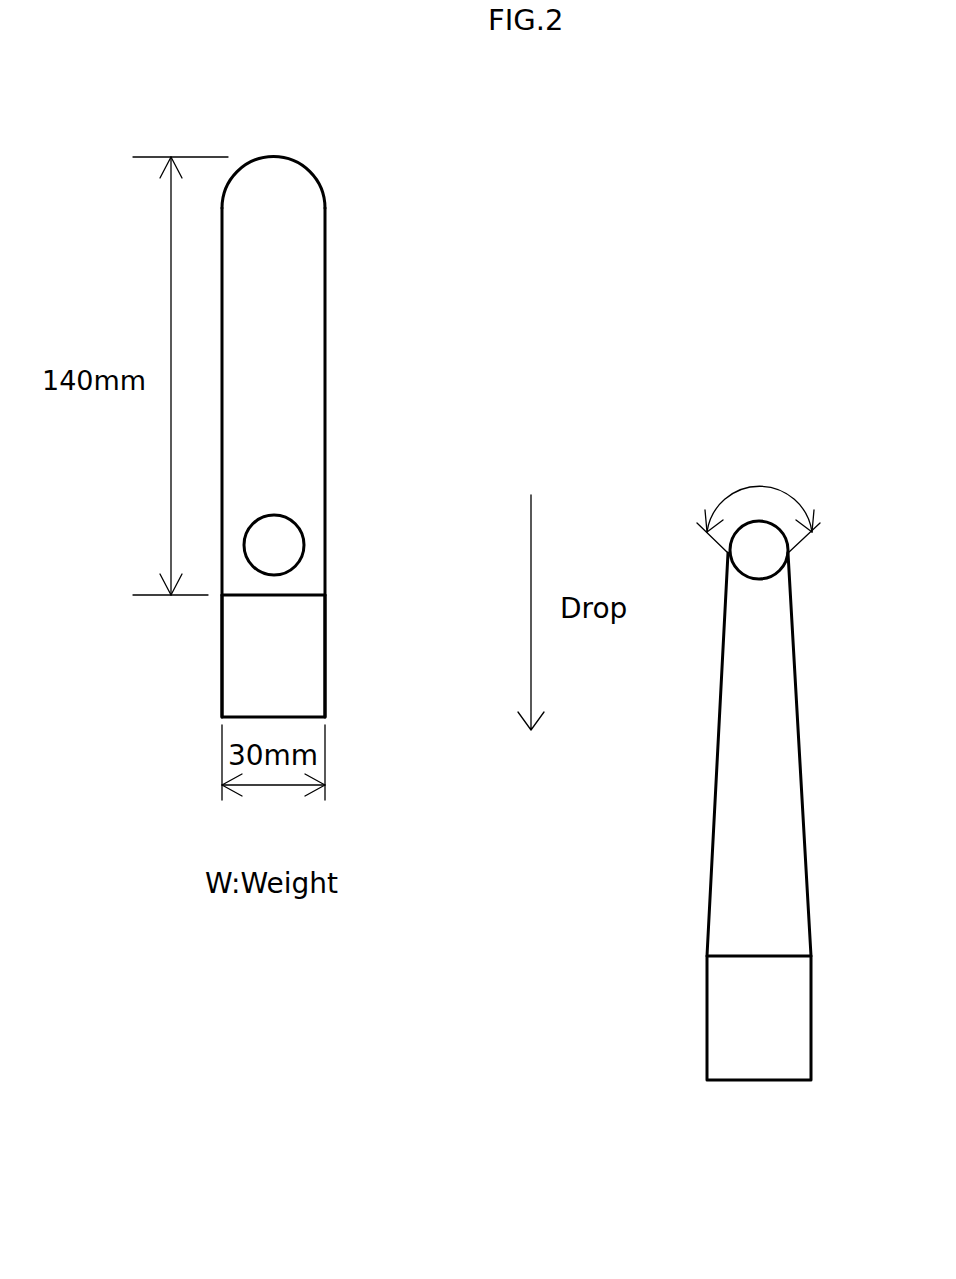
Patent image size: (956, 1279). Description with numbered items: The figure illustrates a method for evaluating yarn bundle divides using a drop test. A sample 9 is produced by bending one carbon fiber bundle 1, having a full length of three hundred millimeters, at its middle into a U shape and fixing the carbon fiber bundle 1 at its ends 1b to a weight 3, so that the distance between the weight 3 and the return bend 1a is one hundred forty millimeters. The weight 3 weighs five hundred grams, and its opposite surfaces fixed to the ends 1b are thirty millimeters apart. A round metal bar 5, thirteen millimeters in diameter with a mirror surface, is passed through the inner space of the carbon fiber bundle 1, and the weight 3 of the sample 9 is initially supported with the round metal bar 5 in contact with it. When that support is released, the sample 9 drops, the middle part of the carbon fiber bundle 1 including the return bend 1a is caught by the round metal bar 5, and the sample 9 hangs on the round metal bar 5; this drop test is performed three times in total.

The carbon fiber bundle 1 is at (325, 442).
The return bend 1a is at (273, 157).
The ends 1b is at (325, 662).
The weight 3 is at (233, 667).
The round metal bar 5 is at (282, 548).
The sample 9 is at (357, 335).